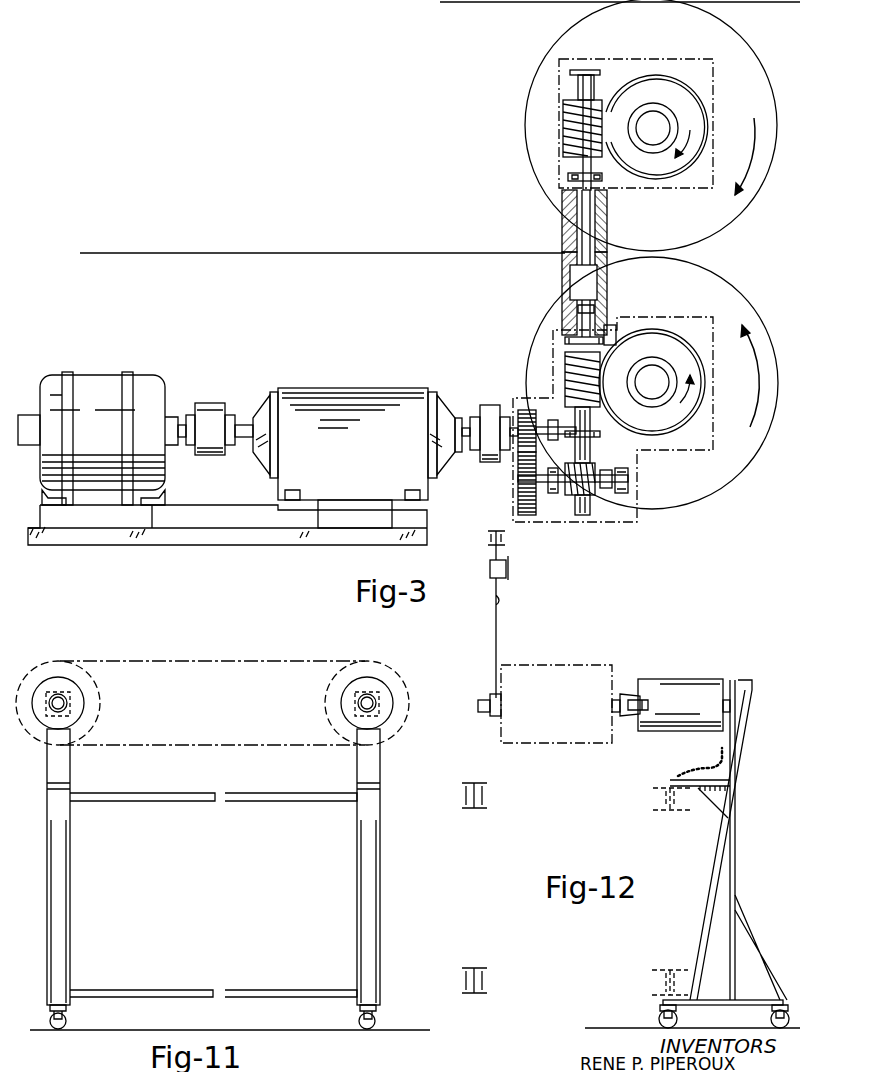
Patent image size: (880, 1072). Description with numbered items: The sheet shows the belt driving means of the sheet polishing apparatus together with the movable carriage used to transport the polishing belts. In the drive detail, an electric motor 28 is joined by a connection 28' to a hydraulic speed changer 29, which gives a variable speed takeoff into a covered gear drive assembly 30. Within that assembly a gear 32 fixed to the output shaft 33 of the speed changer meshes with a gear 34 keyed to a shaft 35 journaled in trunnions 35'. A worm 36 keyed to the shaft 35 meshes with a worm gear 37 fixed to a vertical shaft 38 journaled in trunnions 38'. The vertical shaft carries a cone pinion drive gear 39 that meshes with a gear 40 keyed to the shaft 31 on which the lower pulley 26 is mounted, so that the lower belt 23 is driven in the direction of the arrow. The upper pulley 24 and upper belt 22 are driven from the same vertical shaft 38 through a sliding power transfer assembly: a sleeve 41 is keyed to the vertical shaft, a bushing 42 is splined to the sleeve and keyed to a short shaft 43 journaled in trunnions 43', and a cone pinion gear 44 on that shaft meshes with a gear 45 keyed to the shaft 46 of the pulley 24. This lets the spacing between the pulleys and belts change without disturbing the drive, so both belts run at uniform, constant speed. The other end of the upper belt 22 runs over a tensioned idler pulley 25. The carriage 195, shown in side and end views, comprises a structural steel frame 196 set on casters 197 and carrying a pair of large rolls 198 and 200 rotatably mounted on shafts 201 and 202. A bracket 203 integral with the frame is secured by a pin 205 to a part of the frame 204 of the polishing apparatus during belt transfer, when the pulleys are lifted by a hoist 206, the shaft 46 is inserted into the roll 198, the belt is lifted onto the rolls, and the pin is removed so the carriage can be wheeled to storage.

In FIG. 3, the upper belt 22 is at (478, 4).
In FIG. 11, the upper belt 22 is at (245, 660).
In FIG. 3, the lower belt 23 is at (484, 256).
In FIG. 3, the driven pulley 24 is at (740, 52).
In FIG. 11, the driven pulley 24 is at (392, 673).
In FIG. 12, the driven pulley 24 is at (572, 672).
In FIG. 11, the tensioned idler pulley 25 is at (88, 692).
In FIG. 3, the pulley 26 is at (705, 490).
In FIG. 3, the electric motor 28 is at (98, 428).
In FIG. 3, the connection 28' is at (215, 410).
In FIG. 3, the speed changer 29 is at (345, 385).
In FIG. 3, the gear drive assembly 30 is at (540, 373).
In FIG. 3, the shaft 31 is at (660, 375).
In FIG. 3, the gear 32 is at (523, 410).
In FIG. 3, the output shaft 33 is at (540, 440).
In FIG. 3, the gear 34 is at (530, 512).
In FIG. 3, the shaft 35 is at (573, 470).
In FIG. 3, the trunnions 35' is at (644, 475).
In FIG. 3, the worm 36 is at (606, 470).
In FIG. 3, the worm gear 37 is at (586, 463).
In FIG. 3, the vertical shaft 38 is at (585, 462).
In FIG. 3, the trunnions 38' is at (556, 372).
In FIG. 3, the cone pinion drive gear 39 is at (565, 358).
In FIG. 3, the gear 40 is at (612, 325).
In FIG. 3, the sleeve 41 is at (562, 278).
In FIG. 3, the bushing 42 is at (562, 230).
In FIG. 3, the short shaft 43 is at (561, 132).
In FIG. 3, the trunnions 43' is at (606, 117).
In FIG. 3, the cone pinion gear 44 is at (563, 128).
In FIG. 3, the gear 45 is at (616, 85).
In FIG. 3, the shaft 46 is at (658, 120).
In FIG. 12, the shaft 46 is at (622, 690).
In FIG. 11, the carriage 195 is at (388, 888).
In FIG. 12, the carriage 195 is at (716, 822).
In FIG. 11, the structural steel frame 196 is at (70, 898).
In FIG. 12, the structural steel frame 196 is at (738, 862).
In FIG. 11, the casters 197 is at (68, 1020).
In FIG. 12, the casters 197 is at (658, 1017).
In FIG. 11, the roll 198 is at (358, 704).
In FIG. 11, the roll 200 is at (70, 708).
In FIG. 11, the shaft 201 is at (376, 702).
In FIG. 11, the shaft 202 is at (60, 700).
In FIG. 12, the bracket 203 is at (714, 800).
In FIG. 12, the frame 204 is at (652, 793).
In FIG. 12, the pin 205 is at (680, 776).
In FIG. 12, the hoist 206 is at (510, 568).